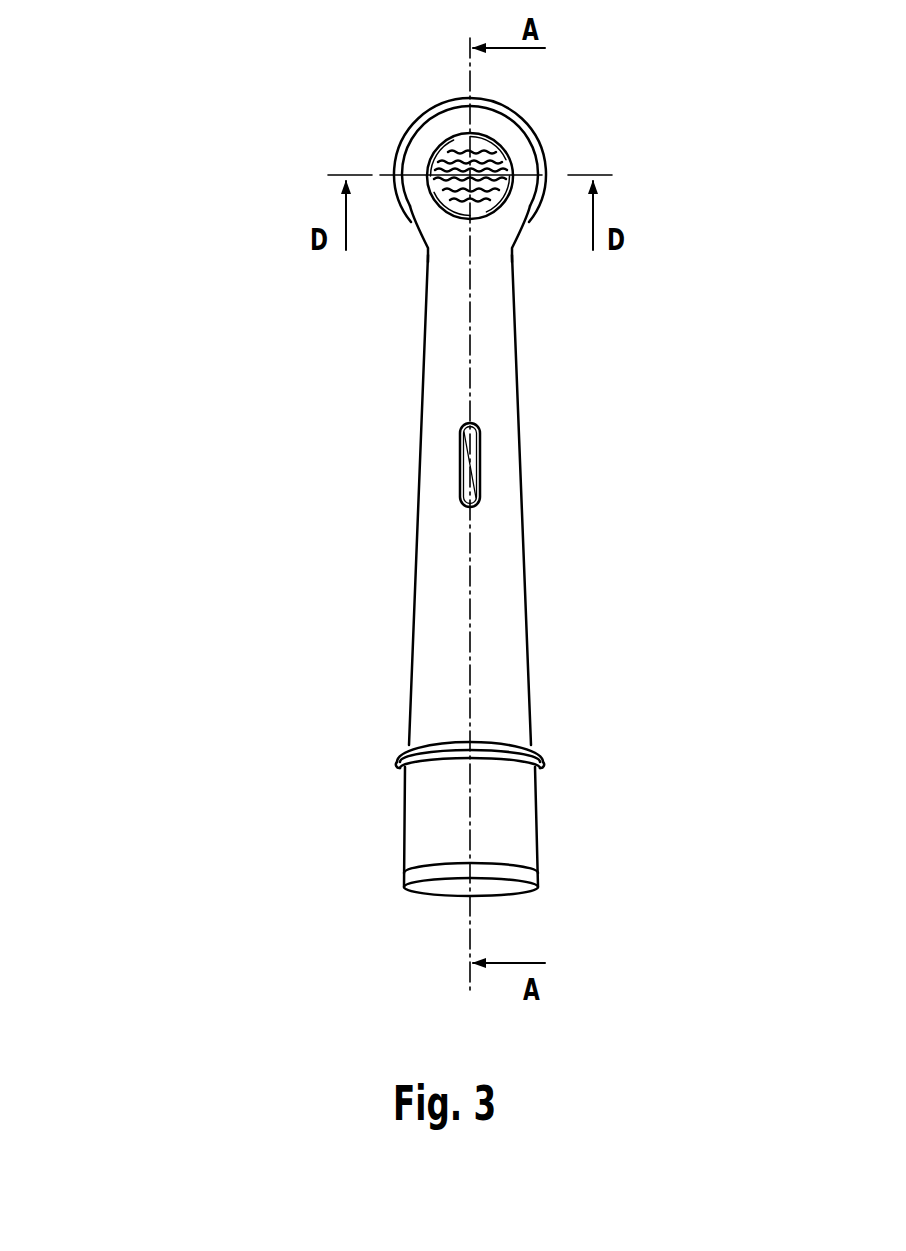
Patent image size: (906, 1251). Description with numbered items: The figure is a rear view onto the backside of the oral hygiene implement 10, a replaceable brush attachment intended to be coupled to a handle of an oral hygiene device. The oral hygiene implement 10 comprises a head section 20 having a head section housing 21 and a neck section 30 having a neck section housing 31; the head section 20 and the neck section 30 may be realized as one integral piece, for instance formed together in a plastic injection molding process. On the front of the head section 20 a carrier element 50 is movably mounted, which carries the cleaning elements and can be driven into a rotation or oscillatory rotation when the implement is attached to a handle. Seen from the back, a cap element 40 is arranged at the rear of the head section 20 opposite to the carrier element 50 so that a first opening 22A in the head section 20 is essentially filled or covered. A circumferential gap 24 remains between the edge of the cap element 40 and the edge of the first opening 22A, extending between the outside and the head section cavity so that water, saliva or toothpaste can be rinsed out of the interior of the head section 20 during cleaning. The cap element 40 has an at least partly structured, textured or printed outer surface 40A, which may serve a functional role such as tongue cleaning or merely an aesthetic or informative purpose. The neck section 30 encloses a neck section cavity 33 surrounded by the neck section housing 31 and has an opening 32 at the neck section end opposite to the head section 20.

The oral hygiene implement 10 is at (180, 118).
The head section 20 is at (688, 118).
The head section housing 21 is at (512, 208).
The first opening 22A is at (428, 208).
The circumferential gap 24 is at (455, 137).
The neck section 30 is at (577, 516).
The neck section housing 31 is at (512, 640).
The opening 32 is at (458, 894).
The neck section cavity 33 is at (425, 889).
The cap element 40 is at (495, 165).
The outer surface 40A is at (482, 154).
The carrier element 50 is at (405, 135).